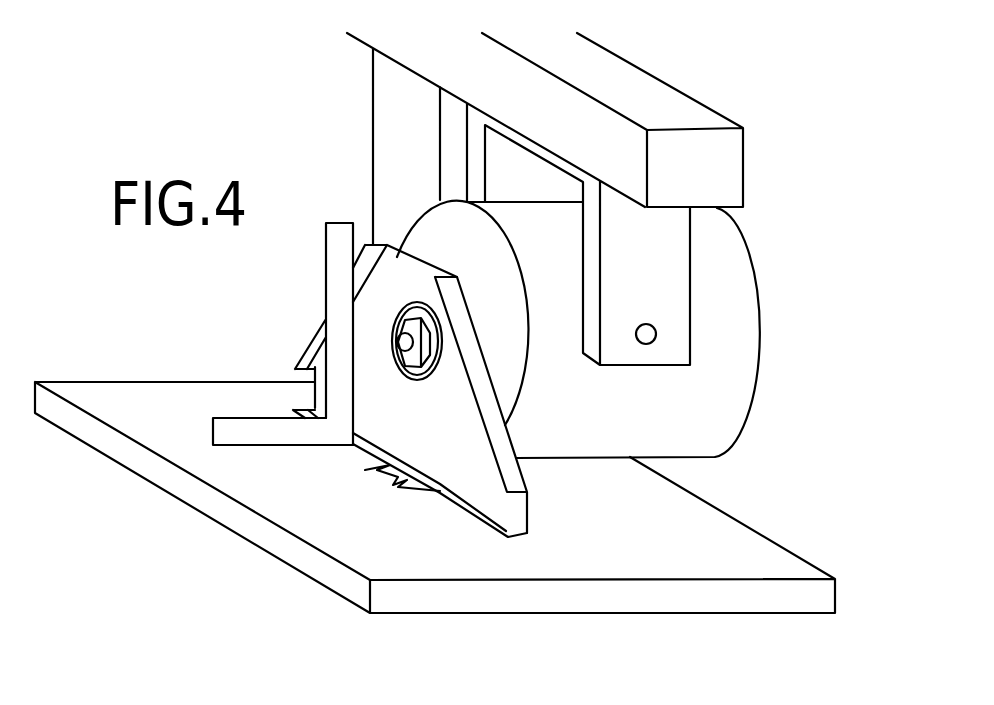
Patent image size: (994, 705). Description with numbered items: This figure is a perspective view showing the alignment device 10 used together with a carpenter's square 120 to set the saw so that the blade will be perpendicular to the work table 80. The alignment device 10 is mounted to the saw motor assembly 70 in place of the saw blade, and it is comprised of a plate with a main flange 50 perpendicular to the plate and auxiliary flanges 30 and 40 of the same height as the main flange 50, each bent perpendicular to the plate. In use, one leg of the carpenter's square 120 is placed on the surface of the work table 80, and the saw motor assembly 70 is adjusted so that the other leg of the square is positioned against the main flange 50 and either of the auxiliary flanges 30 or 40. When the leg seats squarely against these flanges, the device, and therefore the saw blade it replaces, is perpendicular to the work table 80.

The alignment device 10 is at (512, 507).
The auxiliary flange 30 is at (510, 468).
The auxiliary flange 40 is at (313, 357).
The main flange 50 is at (467, 502).
The saw motor assembly 70 is at (717, 405).
The work table 80 is at (155, 397).
The carpenter's square 120 is at (287, 435).